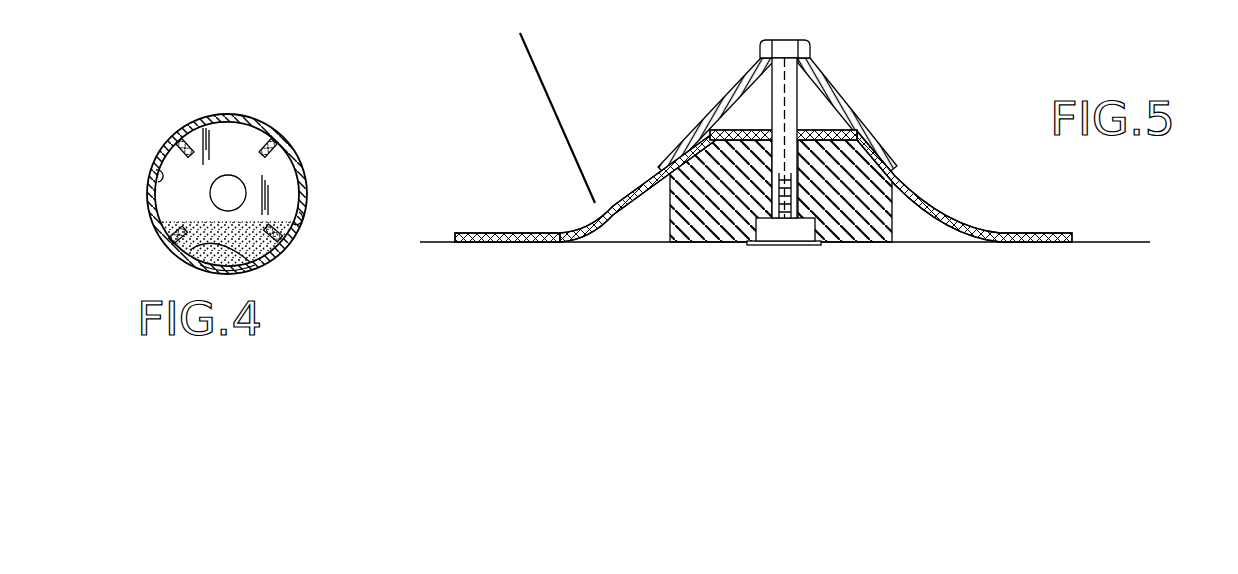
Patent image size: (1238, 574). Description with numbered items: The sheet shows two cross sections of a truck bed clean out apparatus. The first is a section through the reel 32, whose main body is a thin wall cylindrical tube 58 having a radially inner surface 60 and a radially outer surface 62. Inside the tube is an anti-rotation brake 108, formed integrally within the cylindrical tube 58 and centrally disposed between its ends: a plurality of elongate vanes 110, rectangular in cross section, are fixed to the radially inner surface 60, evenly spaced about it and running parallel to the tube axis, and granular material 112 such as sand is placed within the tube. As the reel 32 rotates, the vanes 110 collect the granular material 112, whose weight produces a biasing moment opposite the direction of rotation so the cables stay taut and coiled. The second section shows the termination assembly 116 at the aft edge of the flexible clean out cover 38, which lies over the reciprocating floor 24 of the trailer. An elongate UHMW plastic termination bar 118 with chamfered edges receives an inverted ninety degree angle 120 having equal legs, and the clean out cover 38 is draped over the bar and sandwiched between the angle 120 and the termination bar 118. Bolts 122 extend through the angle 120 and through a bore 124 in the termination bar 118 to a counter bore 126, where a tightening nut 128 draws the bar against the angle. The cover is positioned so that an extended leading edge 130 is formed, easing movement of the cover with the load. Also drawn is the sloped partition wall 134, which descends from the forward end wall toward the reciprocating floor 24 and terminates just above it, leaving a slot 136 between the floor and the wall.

In FIG. 5, the reciprocating floor 24 is at (610, 244).
In FIG. 4, the reel 32 is at (305, 158).
In FIG. 5, the clean out cover 38 is at (528, 232).
In FIG. 4, the cylindrical tube 58 is at (265, 262).
In FIG. 4, the radially inner surface 60 is at (155, 183).
In FIG. 4, the radially outer surface 62 is at (305, 190).
In FIG. 4, the anti-rotation brake 108 is at (148, 237).
In FIG. 4, the elongate vanes 110 is at (178, 143).
In FIG. 4, the granular material 112 is at (200, 242).
In FIG. 5, the termination assembly 116 is at (895, 87).
In FIG. 5, the termination bar 118 is at (870, 227).
In FIG. 5, the inverted 90 degree angle 120 is at (709, 132).
In FIG. 5, the bolts 122 is at (800, 40).
In FIG. 5, the bore 124 is at (802, 173).
In FIG. 5, the counter bore 126 is at (757, 228).
In FIG. 5, the nut 128 is at (793, 234).
In FIG. 5, the extended leading edge 130 is at (1027, 220).
In FIG. 5, the sloped partition wall 134 is at (563, 105).
In FIG. 5, the slot 136 is at (608, 203).